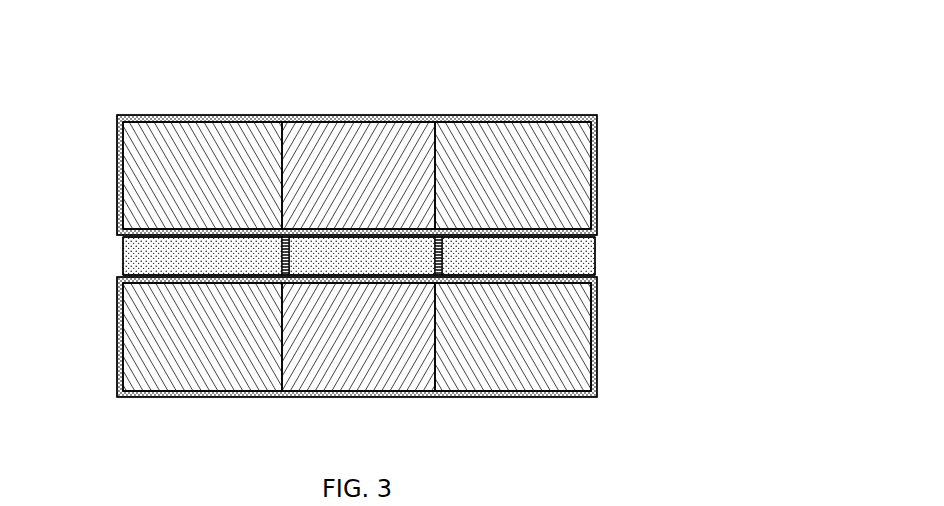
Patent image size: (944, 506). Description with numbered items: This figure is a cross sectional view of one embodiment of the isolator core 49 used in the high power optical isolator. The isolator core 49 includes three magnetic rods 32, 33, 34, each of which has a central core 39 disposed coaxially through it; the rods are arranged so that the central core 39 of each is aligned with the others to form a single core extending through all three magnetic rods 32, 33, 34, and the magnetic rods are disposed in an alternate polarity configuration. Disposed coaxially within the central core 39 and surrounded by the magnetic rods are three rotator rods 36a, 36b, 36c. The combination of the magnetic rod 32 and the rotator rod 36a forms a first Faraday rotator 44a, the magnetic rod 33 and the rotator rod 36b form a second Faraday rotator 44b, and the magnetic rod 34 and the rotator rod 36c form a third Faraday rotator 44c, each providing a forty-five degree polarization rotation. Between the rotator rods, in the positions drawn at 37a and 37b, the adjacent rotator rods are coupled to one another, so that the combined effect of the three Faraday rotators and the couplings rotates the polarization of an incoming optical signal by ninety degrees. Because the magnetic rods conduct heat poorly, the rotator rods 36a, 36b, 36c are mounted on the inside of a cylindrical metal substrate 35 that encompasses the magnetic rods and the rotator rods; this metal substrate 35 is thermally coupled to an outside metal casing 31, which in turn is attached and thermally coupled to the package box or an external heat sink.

The metal casing 31 is at (577, 113).
The magnetic rod 32 is at (156, 173).
The magnetic rod 33 is at (365, 165).
The magnetic rod 34 is at (546, 170).
The cylindrical metal substrate 35 is at (595, 238).
The rotator rod 36a is at (121, 277).
The rotator rod 36b is at (317, 262).
The rotator rod 36c is at (490, 262).
The first spacer divider 37a is at (282, 258).
The second spacer divider 37b is at (445, 258).
The central core 39 is at (121, 247).
The first Faraday rotator 44a is at (226, 80).
The second Faraday rotator 44b is at (371, 80).
The third Faraday rotator 44c is at (531, 78).
The isolator core 49 is at (595, 33).